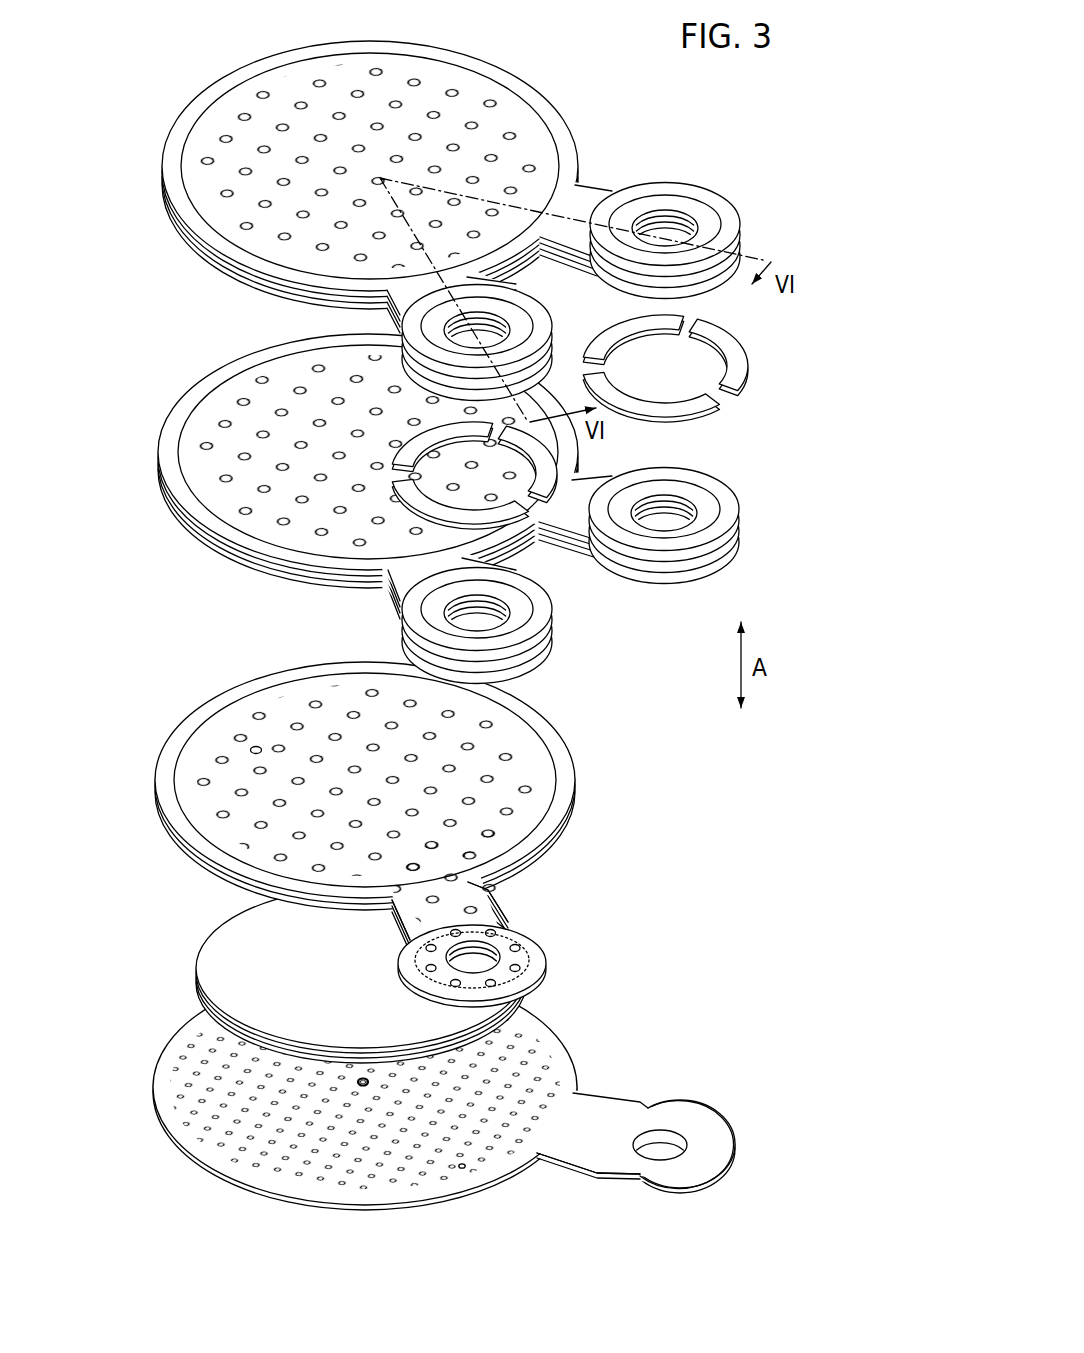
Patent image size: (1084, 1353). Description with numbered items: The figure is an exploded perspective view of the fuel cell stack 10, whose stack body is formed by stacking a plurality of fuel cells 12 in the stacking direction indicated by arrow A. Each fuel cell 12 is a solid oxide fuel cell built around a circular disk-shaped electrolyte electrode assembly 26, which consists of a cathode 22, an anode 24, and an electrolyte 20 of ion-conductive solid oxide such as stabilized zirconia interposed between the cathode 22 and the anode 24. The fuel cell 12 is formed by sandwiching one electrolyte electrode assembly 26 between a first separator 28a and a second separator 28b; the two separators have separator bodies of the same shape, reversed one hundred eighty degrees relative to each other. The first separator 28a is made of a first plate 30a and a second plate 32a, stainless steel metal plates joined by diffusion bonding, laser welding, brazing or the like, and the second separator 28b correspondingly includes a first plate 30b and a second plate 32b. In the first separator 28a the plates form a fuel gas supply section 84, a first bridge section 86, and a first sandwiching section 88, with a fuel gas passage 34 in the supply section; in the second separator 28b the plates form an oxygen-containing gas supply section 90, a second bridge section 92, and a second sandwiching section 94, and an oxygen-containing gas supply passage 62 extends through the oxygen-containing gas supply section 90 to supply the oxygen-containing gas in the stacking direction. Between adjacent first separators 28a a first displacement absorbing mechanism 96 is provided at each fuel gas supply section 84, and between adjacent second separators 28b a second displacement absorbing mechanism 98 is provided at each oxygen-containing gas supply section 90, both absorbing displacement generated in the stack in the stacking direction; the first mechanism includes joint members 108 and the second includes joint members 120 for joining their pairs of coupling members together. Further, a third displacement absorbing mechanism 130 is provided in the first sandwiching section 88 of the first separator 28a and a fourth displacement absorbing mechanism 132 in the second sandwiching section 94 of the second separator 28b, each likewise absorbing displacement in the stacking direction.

The fuel cell stack 10 is at (674, 87).
The fuel cell 12 is at (429, 524).
The electrolyte 20 is at (198, 986).
The cathode 22 is at (217, 951).
The anode 24 is at (212, 1013).
The electrolyte electrode assembly 26 is at (296, 671).
The first separator 28a is at (412, 737).
The second separator 28b is at (405, 575).
The first plate 30a is at (426, 1087).
The first plate 30b is at (575, 830).
The second plate 32a is at (208, 1173).
The second plate 32b is at (568, 776).
The fuel gas (hydrogen) passage hole 34 is at (658, 1145).
The oxygen-containing gas supply passage 62 is at (481, 962).
The fuel gas supply section 84 is at (697, 1122).
The first bridge section 86 is at (585, 1142).
The first sandwiching section 88 is at (520, 1067).
The oxygen-containing gas supply section 90 is at (514, 960).
The second bridge section 92 is at (463, 912).
The second sandwiching section 94 is at (518, 743).
The first displacement absorbing mechanism 96 is at (722, 197).
The second displacement absorbing mechanism 98 is at (553, 311).
The joint members 108 is at (623, 333).
The joint members 120 is at (407, 463).
The third displacement absorbing mechanism 130 is at (466, 1168).
The fourth displacement absorbing mechanism 132 is at (250, 747).